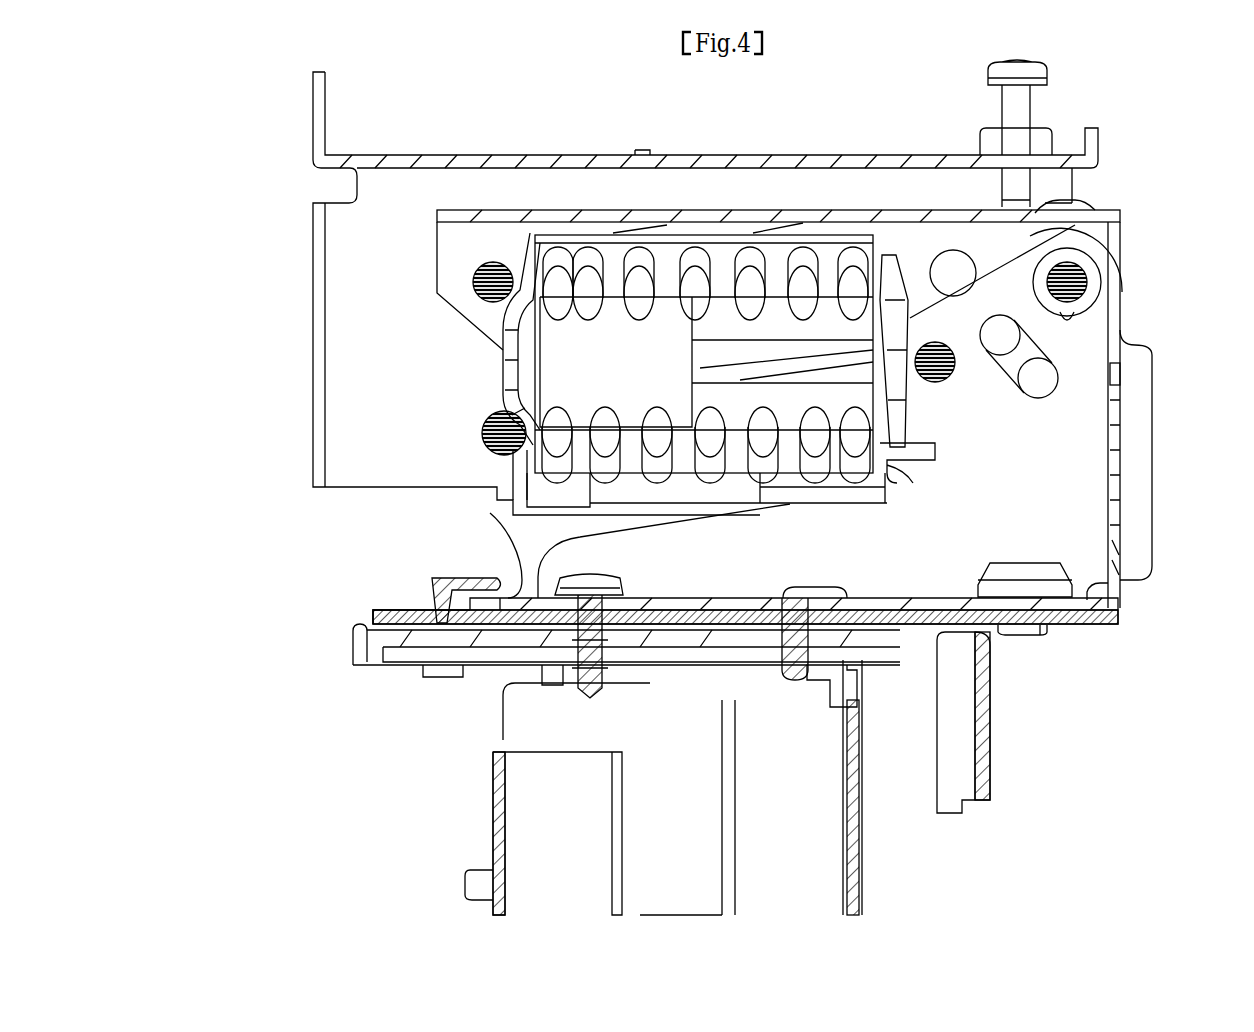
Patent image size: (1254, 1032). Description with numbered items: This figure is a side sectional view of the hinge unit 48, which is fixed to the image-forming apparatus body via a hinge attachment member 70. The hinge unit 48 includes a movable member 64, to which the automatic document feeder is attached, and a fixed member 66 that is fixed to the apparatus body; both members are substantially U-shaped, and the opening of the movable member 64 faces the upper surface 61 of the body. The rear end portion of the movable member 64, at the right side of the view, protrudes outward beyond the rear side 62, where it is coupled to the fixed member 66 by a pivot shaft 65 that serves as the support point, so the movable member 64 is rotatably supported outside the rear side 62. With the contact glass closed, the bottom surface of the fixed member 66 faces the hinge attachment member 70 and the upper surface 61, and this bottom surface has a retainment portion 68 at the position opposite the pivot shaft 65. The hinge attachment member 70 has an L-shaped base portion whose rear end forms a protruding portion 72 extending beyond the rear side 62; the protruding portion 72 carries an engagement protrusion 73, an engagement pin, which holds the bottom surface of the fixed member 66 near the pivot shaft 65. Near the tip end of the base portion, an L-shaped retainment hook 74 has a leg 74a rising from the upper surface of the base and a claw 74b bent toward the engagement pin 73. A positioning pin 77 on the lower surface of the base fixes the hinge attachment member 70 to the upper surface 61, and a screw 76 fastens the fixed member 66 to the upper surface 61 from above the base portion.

The hinge unit 48 is at (212, 102).
The upper surface 61 is at (356, 628).
The rear side 62 is at (988, 785).
The movable member 64 is at (462, 250).
The pivot shaft 65 is at (1070, 278).
The fixed member 66 is at (1068, 422).
The retainment portion 68 is at (500, 585).
The hinge attachment member 70 is at (1098, 640).
The protruding portion 72 is at (1062, 632).
The engagement protrusion 73 is at (1030, 567).
The retainment hook 74 is at (410, 575).
The leg 74a is at (430, 590).
The claw 74b is at (468, 577).
The screw 76 is at (548, 605).
The positioning pin 77 is at (790, 690).